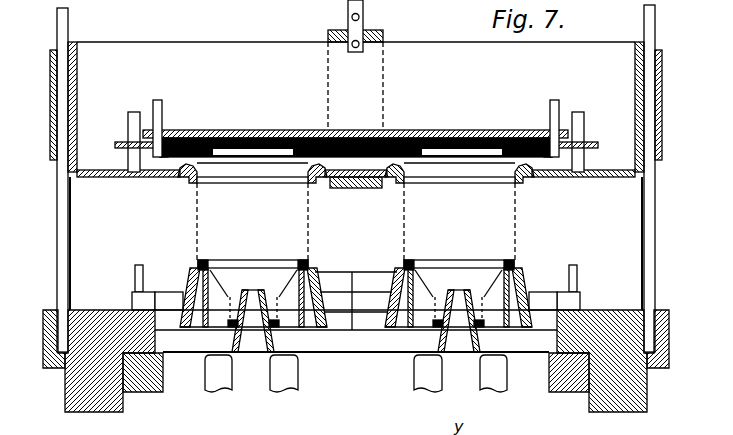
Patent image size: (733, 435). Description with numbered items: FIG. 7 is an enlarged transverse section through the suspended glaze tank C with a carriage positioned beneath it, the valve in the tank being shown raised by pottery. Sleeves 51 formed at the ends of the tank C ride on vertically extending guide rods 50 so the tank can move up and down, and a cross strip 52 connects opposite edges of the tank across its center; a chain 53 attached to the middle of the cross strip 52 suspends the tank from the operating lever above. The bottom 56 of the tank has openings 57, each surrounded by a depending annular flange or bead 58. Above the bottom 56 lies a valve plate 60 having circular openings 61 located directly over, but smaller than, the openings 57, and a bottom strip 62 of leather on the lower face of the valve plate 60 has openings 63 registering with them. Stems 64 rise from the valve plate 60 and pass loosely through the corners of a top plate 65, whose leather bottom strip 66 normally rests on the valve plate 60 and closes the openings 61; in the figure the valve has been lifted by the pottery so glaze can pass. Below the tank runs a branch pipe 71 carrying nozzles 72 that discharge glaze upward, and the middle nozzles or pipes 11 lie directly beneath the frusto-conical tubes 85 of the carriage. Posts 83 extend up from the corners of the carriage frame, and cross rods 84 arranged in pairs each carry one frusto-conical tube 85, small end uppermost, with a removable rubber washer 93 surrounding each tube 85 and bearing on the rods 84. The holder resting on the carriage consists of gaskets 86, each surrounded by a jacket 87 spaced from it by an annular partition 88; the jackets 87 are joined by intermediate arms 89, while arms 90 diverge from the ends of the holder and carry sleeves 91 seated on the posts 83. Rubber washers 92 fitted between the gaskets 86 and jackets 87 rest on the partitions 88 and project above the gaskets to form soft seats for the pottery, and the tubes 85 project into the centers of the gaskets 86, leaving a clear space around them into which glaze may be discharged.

The tank C is at (219, 42).
The middle nozzles or pipes 11 is at (547, 353).
The guide rods 50 is at (67, 258).
The sleeves 51 is at (50, 148).
The cross strip 52 is at (384, 32).
The chain 53 is at (363, 6).
The bottom 56 is at (163, 178).
The openings 57 is at (128, 127).
The depending annular flange or bead 58 is at (186, 182).
The valve plate 60 is at (598, 147).
The circular openings 61 is at (282, 130).
The bottom strip 62 is at (357, 188).
The openings 63 is at (250, 130).
The stems 64 is at (162, 114).
The top plate 65 is at (410, 130).
The bottom strip 66 is at (355, 130).
The branch pipe 71 is at (352, 272).
The nozzles 72 is at (270, 378).
The posts 83 is at (143, 276).
The cross rods 84 is at (234, 340).
The frusto-conical tube 85 is at (274, 346).
The gaskets 86 is at (200, 316).
The jacket 87 is at (190, 305).
The annular partition 88 is at (292, 272).
The intermediate arms 89 is at (352, 312).
The arms 90 is at (543, 292).
The sleeves 91 is at (132, 296).
The rubber washers 92 is at (299, 262).
The washers 93 is at (214, 272).